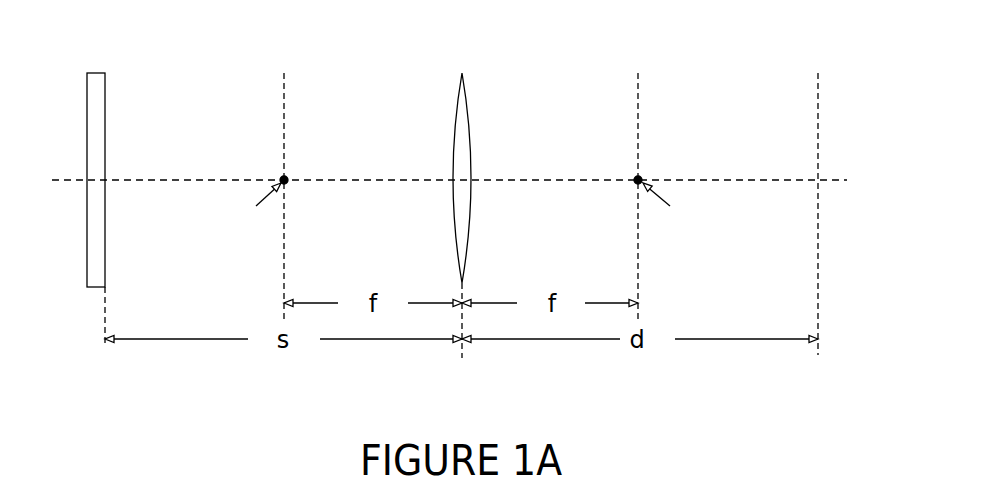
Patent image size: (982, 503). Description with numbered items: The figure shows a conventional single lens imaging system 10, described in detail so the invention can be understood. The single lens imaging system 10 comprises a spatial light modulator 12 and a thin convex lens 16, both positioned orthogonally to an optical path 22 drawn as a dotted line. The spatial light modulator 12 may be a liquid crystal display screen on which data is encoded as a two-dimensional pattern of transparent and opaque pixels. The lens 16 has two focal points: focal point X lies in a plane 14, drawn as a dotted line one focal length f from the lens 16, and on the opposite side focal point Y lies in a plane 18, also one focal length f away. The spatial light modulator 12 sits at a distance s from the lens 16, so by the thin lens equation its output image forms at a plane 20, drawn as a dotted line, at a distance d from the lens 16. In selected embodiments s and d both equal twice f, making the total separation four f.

The single lens imaging system 10 is at (120, 415).
The spatial light modulator 12 is at (96, 72).
The plane 14 is at (284, 72).
The thin convex lens 16 is at (462, 72).
The plane 18 is at (638, 72).
The plane 20 is at (818, 72).
The optical path 22 is at (855, 182).